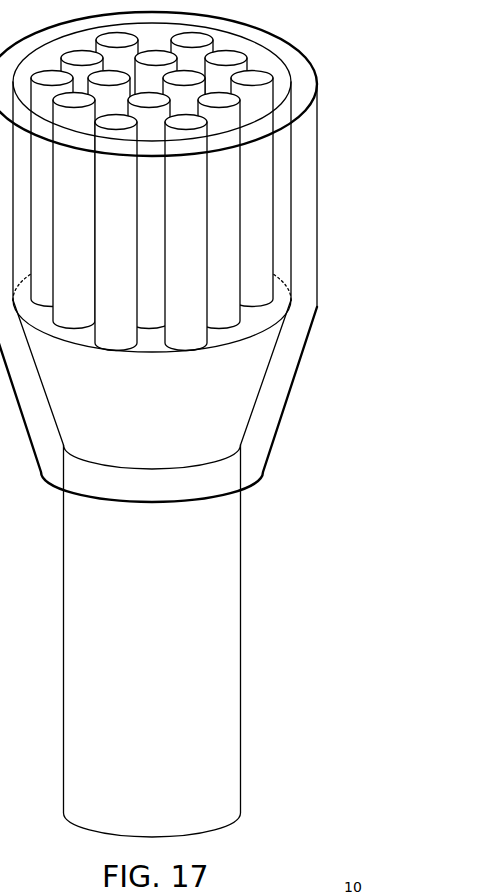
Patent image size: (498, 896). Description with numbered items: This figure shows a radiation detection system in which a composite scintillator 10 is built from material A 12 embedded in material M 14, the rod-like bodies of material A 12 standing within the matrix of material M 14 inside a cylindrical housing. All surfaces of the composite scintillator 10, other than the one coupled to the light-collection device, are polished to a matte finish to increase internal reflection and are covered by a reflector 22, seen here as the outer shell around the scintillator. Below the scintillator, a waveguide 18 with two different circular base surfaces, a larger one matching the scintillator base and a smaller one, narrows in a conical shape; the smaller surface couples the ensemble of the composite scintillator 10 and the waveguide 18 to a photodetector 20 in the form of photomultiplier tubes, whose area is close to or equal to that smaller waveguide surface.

The composite scintillator 10 is at (198, 422).
The material A 12 is at (252, 195).
The material M 14 is at (275, 268).
The reflector 22 is at (300, 212).
The waveguide 18 is at (234, 377).
The photodetector 20 is at (208, 673).